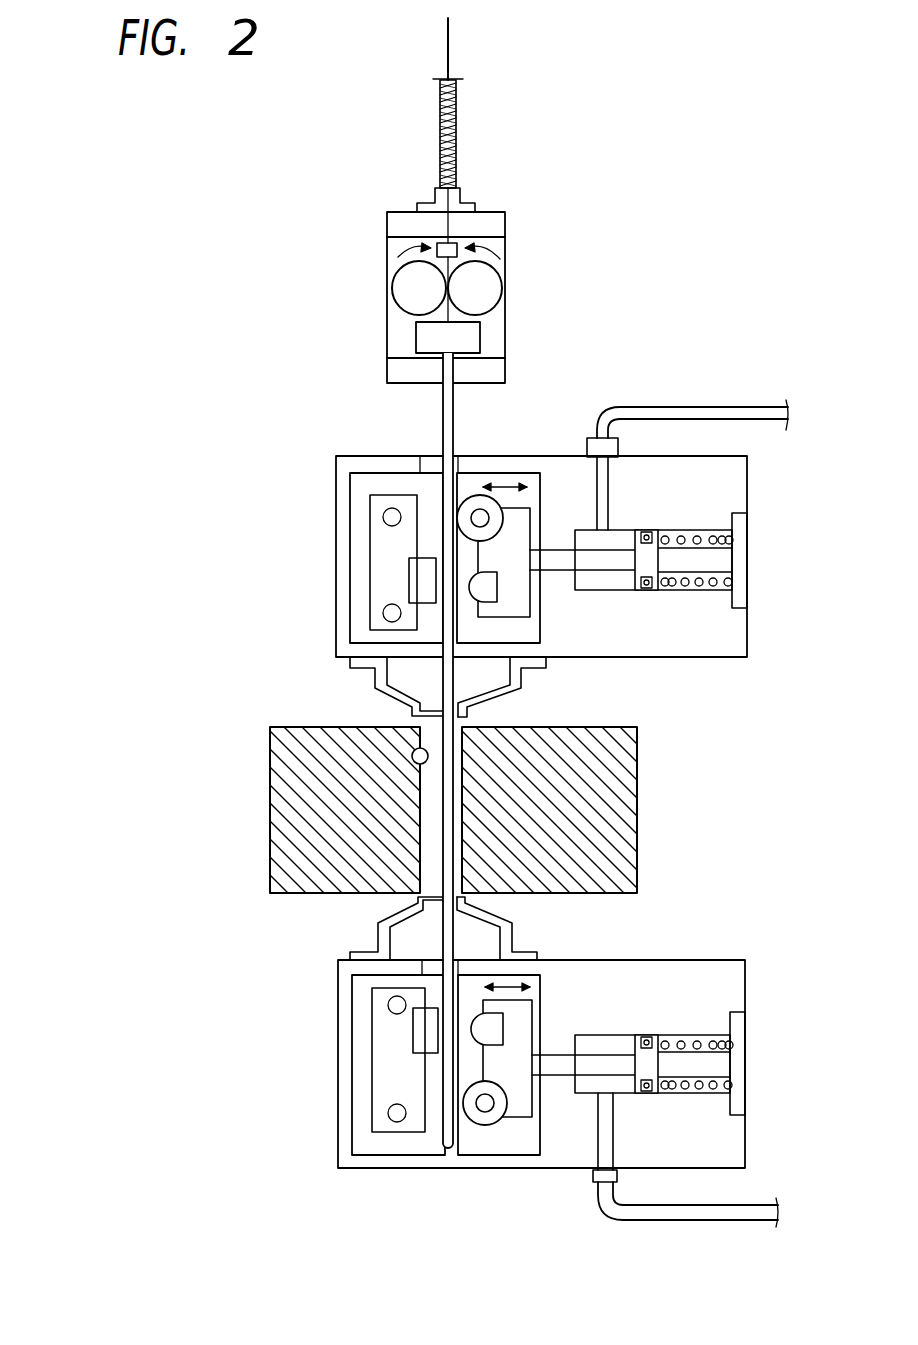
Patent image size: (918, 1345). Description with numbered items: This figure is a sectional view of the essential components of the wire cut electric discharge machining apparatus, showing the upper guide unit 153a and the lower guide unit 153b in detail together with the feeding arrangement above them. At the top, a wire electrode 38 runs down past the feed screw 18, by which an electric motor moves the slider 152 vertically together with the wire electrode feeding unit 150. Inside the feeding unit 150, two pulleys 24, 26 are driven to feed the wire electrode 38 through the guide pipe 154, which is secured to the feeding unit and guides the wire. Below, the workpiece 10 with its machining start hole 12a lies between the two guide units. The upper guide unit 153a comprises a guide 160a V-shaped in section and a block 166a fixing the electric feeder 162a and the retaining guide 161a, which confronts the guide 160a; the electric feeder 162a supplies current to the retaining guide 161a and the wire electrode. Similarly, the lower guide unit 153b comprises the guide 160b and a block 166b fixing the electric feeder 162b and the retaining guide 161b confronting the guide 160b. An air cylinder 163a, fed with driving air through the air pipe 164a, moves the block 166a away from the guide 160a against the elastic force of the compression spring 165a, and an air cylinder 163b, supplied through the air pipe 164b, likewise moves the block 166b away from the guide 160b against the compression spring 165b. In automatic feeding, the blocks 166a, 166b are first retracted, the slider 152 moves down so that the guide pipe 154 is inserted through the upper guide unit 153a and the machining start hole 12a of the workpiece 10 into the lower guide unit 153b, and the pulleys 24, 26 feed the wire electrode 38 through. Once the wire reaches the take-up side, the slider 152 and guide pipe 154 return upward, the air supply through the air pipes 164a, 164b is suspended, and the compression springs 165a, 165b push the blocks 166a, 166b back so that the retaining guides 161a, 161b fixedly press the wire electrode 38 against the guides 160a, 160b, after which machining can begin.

The wire electrode 38 is at (448, 52).
The feed screw 18 is at (456, 143).
The slider 152 is at (505, 228).
The wire electrode feeding unit 150 is at (505, 346).
The pulley 24 is at (410, 287).
The pulley 26 is at (483, 286).
The guide pipe 154 is at (443, 411).
The upper guide unit 153a is at (336, 497).
The guide 160a is at (414, 580).
The electric feeder 162a is at (477, 505).
The retaining guide 161a is at (486, 587).
The block 166a is at (510, 618).
The air cylinder 163a is at (647, 535).
The compression spring 165a is at (693, 586).
The air pipe 164a is at (683, 410).
The workpiece 10 is at (638, 778).
The machining start hole 12a is at (418, 750).
The lower guide unit 153b is at (340, 1000).
The guide 160b is at (416, 1030).
The electric feeder 162b is at (493, 1118).
The retaining guide 161b is at (504, 1029).
The block 166b is at (528, 1118).
The air cylinder 163b is at (647, 1038).
The compression spring 165b is at (690, 1094).
The air pipe 164b is at (687, 1220).